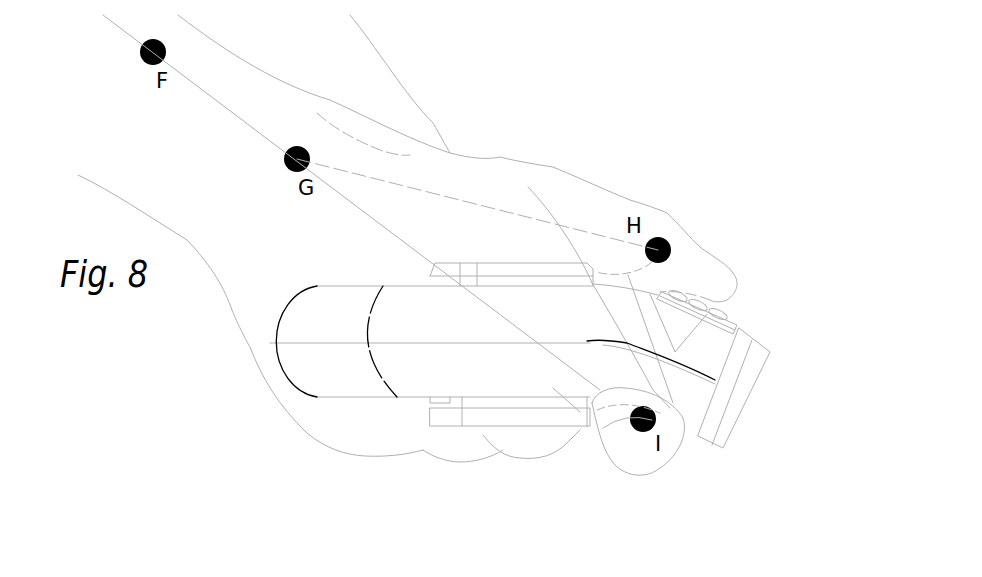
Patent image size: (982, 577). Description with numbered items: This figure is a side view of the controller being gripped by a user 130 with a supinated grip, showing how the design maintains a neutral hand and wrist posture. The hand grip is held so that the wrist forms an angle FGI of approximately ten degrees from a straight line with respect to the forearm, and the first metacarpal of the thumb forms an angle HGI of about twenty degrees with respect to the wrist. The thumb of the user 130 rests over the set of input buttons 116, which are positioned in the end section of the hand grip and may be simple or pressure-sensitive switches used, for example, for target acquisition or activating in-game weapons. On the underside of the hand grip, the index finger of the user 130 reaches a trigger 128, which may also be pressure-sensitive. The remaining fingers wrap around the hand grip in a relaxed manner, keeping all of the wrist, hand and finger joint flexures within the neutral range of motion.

The user 130 is at (128, 178).
The input buttons 116 is at (730, 323).
The trigger 128 is at (603, 405).